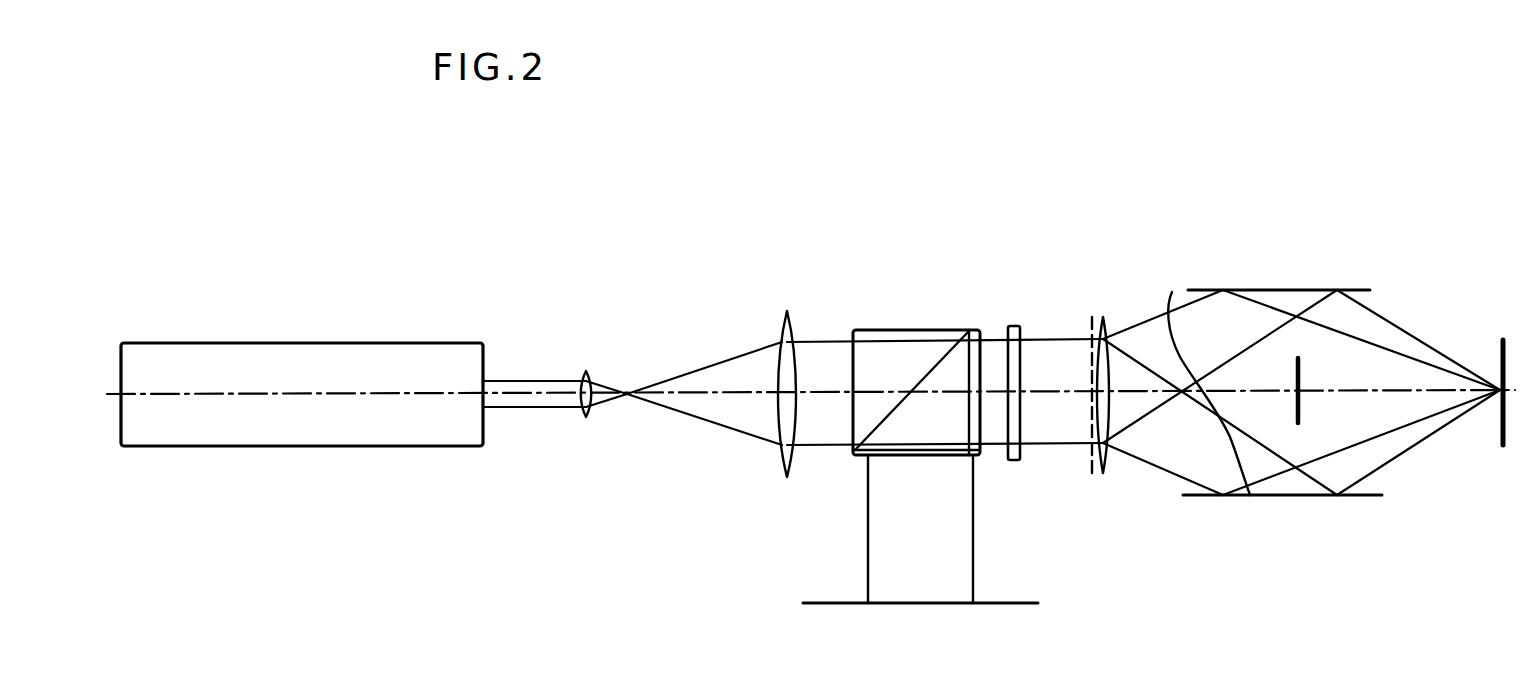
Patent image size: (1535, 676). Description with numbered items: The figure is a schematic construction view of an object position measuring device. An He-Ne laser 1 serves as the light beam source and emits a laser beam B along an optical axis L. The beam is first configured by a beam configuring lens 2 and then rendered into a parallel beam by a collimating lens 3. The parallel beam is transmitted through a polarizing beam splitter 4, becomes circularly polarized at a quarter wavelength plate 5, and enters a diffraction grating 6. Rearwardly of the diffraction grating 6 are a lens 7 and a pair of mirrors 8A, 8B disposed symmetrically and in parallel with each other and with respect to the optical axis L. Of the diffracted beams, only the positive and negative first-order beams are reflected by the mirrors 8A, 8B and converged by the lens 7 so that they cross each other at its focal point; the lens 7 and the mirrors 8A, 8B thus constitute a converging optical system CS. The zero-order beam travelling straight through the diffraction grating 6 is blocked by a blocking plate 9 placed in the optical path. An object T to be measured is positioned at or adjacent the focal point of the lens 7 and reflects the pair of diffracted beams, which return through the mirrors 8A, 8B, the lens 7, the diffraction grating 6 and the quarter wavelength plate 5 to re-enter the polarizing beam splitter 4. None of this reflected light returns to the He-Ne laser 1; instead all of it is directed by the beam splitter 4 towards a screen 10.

The He-Ne laser 1 is at (457, 343).
The beam configuring lens 2 is at (586, 370).
The collimating lens 3 is at (787, 312).
The polarizing beam splitter 4 is at (908, 330).
The quarter wavelength plate 5 is at (1015, 326).
The diffraction grating 6 is at (1091, 330).
The lens 7 is at (1108, 326).
The mirror 8A is at (1259, 288).
The mirror 8B is at (1172, 292).
The blocking plate 9 is at (1300, 400).
The screen 10 is at (1030, 603).
The laser beam B is at (533, 410).
The optical axis L is at (697, 393).
The object T is at (1500, 425).
The converging optical system CS is at (1168, 212).